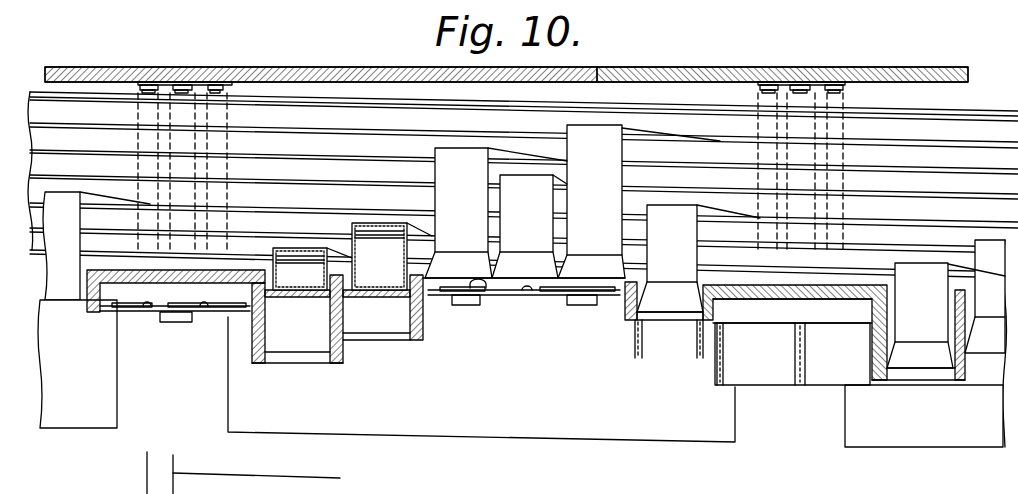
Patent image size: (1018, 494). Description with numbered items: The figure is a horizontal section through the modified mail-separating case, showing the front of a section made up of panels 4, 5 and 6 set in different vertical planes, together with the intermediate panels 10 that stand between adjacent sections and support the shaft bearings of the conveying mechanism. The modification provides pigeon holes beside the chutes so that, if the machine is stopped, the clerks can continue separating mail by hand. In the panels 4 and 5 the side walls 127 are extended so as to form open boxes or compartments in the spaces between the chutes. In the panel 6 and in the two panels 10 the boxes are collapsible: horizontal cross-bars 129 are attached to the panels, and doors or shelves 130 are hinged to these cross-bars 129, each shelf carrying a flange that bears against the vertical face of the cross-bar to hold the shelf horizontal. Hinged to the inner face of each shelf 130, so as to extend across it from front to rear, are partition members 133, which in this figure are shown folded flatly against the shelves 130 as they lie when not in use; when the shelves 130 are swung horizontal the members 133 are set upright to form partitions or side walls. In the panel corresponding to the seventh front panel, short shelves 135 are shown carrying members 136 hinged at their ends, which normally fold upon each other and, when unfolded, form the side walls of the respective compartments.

The vertical panel 4 is at (300, 295).
The vertical panel 5 is at (390, 300).
The vertical panel 6 is at (470, 288).
The panel 10 is at (140, 287).
The side wall 127 is at (250, 335).
The horizontal cross-bar 129 is at (218, 293).
The door or shelf 130 is at (142, 312).
The partition member 133 is at (147, 315).
The short shelf 135 is at (678, 353).
The hinged member 136 is at (638, 362).